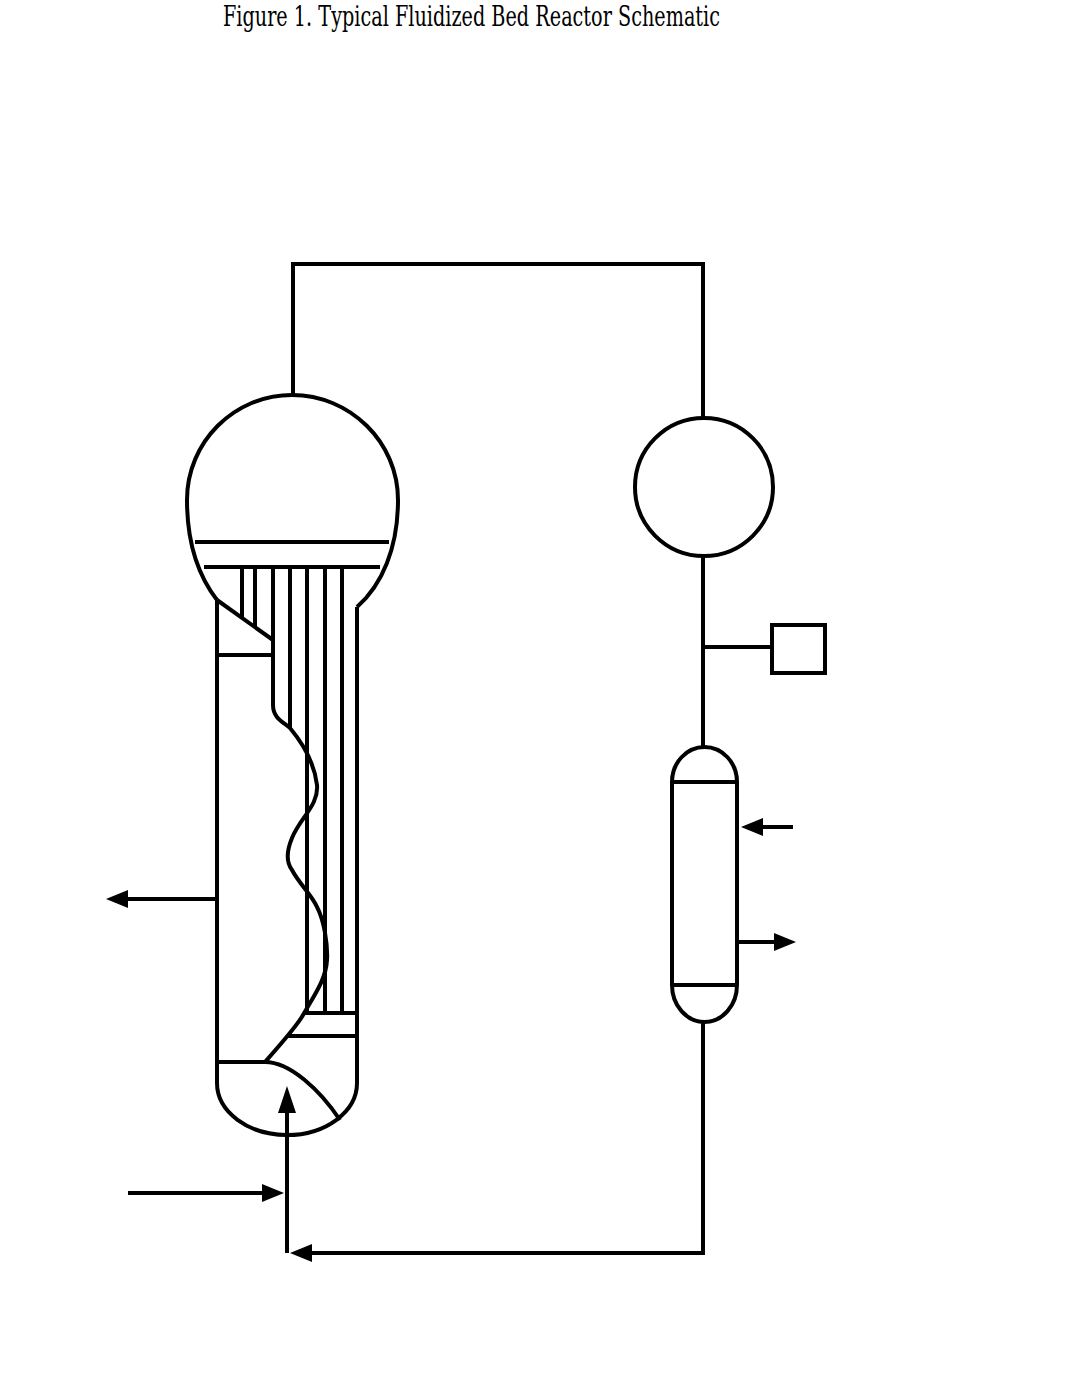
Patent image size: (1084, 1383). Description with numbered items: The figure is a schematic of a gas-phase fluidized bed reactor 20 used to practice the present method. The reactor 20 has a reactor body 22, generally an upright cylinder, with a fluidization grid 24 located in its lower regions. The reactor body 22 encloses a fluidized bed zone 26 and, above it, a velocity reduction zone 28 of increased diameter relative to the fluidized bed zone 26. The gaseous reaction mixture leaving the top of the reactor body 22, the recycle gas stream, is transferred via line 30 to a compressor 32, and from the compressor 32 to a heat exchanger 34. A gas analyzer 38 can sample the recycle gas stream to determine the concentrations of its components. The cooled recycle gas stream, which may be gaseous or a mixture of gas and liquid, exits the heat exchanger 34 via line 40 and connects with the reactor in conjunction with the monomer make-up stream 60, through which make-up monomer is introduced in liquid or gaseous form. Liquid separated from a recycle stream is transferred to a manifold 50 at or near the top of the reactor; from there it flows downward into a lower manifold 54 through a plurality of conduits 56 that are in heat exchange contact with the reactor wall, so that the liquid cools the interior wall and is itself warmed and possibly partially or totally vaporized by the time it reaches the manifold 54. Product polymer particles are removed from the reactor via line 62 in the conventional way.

The gas-phase fluidized bed reactor 20 is at (656, 222).
The reactor body 22 is at (215, 763).
The fluidization grid 24 is at (232, 1062).
The fluidized bed zone 26 is at (240, 853).
The velocity reduction zone 28 is at (218, 472).
The line 30 is at (397, 262).
The compressor 32 is at (650, 482).
The heat exchanger 34 is at (676, 888).
The gas analyzer 38 is at (792, 628).
The line 40 is at (705, 1157).
The manifold 50 is at (247, 538).
The manifold 54 is at (345, 1020).
The conduits 56 is at (347, 775).
The monomer make-up stream line 60 is at (213, 1195).
The product removal line 62 is at (183, 902).